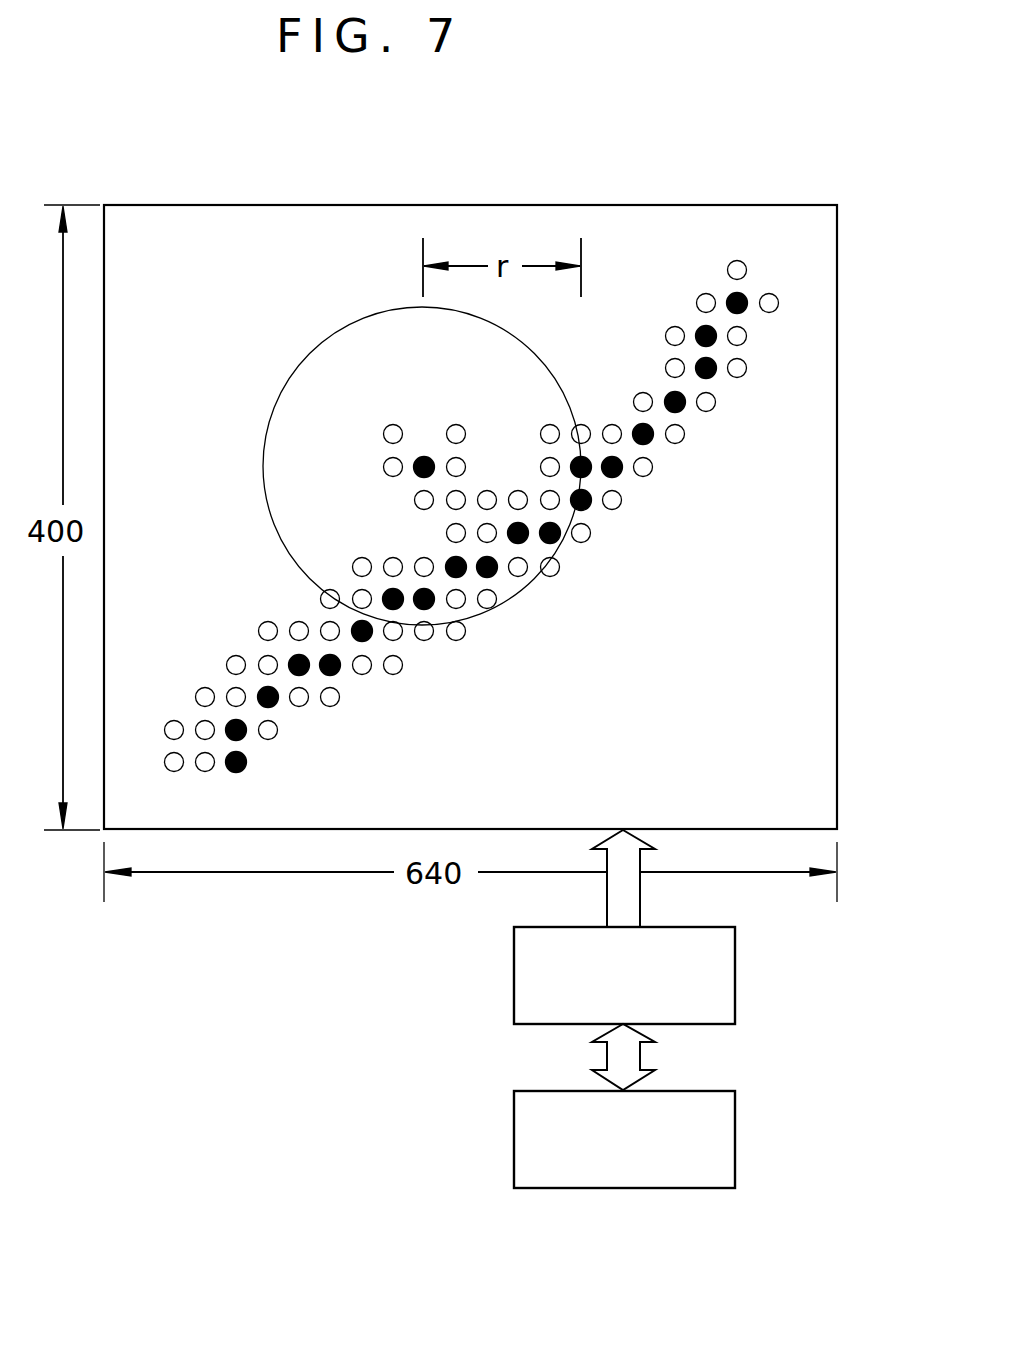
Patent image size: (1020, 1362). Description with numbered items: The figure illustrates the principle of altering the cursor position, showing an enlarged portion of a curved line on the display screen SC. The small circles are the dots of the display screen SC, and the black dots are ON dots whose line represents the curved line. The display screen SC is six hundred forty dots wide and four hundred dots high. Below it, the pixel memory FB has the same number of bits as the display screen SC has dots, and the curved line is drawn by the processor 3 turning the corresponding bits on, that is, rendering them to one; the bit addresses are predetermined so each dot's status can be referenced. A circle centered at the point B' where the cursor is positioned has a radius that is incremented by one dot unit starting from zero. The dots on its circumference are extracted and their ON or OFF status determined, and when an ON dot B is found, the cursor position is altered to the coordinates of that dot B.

The display screen SC is at (745, 204).
The pixel memory FB is at (736, 978).
The processor 3 is at (736, 1141).
The ON status dot B is at (416, 542).
The cursor position point B' is at (453, 421).